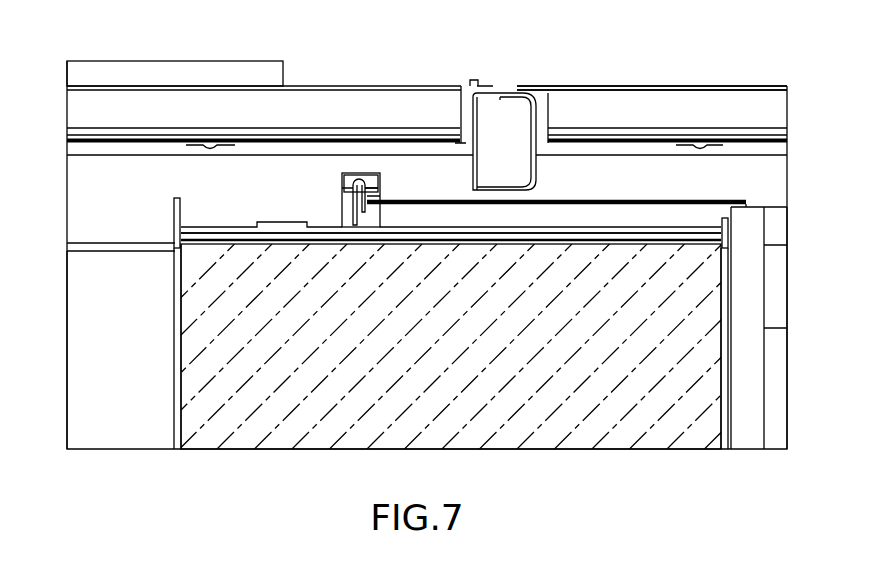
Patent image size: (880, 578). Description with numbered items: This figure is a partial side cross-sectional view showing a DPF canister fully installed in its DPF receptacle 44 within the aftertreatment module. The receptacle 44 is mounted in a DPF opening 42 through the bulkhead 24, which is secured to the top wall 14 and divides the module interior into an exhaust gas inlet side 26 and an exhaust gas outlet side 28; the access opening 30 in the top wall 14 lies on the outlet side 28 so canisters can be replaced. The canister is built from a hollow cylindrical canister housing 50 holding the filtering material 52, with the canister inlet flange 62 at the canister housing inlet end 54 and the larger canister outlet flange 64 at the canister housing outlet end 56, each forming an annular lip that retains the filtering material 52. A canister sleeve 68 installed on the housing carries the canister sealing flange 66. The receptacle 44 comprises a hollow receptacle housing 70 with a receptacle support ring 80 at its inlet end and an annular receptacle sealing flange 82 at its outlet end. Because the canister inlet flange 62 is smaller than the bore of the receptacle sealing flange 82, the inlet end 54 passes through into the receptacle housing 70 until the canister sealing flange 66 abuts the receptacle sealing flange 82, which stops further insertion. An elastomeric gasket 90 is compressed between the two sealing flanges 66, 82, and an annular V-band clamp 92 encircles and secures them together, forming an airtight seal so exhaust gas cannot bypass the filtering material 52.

The top wall 14 is at (585, 86).
The bulkhead 24 is at (474, 131).
The exhaust gas inlet side 26 is at (804, 430).
The exhaust gas outlet side 28 is at (23, 313).
The access opening 30 is at (93, 70).
The DPF opening 42 is at (471, 190).
The DPF receptacle 44 is at (764, 328).
The canister housing 50 is at (599, 230).
The filtering material 52 is at (255, 443).
The canister housing inlet end 54 is at (720, 378).
The canister housing outlet end 56 is at (177, 402).
The canister inlet flange 62 is at (725, 233).
The canister outlet flange 64 is at (177, 224).
The canister sealing flange 66 is at (348, 197).
The canister sleeve 68 is at (318, 227).
The receptacle housing 70 is at (686, 202).
The receptacle support ring 80 is at (746, 308).
The receptacle sealing flange 82 is at (380, 195).
The gasket 90 is at (357, 182).
The clamp 92 is at (367, 182).